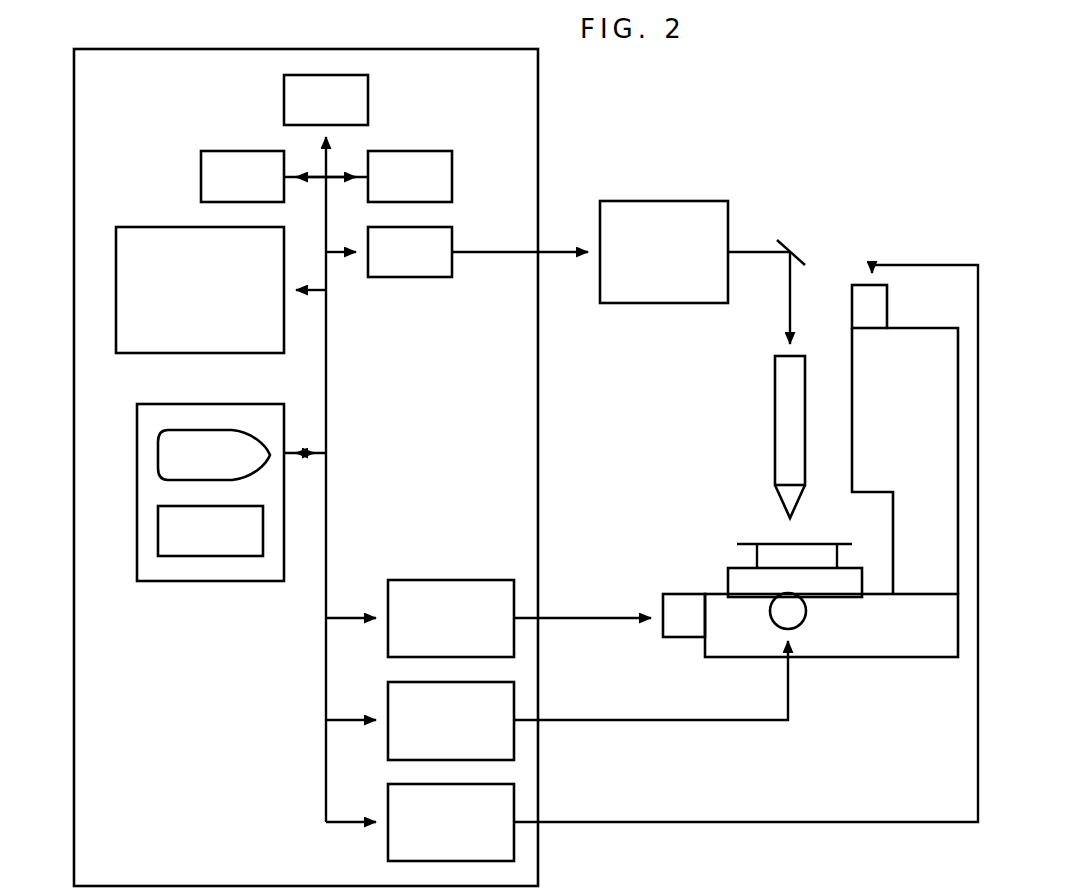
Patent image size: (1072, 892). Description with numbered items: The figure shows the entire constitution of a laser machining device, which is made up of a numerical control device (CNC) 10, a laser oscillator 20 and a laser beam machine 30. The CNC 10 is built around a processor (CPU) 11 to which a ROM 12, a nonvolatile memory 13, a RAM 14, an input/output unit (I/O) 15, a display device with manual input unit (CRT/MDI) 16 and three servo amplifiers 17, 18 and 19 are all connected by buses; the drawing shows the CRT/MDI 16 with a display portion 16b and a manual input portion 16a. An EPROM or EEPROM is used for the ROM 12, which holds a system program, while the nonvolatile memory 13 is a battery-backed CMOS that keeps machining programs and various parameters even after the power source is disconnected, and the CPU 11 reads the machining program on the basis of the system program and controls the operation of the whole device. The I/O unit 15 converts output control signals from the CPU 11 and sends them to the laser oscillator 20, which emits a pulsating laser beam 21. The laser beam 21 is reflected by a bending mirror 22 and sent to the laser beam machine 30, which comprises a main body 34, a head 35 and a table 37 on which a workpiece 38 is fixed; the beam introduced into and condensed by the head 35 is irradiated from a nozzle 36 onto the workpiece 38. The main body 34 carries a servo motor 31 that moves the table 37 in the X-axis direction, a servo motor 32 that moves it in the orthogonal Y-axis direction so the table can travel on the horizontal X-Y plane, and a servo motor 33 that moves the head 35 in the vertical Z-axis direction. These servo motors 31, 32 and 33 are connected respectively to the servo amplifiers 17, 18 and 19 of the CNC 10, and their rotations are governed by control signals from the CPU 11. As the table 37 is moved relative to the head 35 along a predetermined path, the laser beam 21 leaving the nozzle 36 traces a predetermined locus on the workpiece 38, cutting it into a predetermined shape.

The numerical control device (CNC) 10 is at (540, 72).
The processor (CPU) 11 is at (284, 103).
The ROM 12 is at (201, 158).
The nonvolatile memory 13 is at (116, 247).
The RAM 14 is at (412, 151).
The input/output unit (I/O) 15 is at (452, 237).
The display device with manual input unit (CRT/MDI) 16 is at (150, 584).
The input section 16a is at (198, 558).
The display section 16b is at (188, 431).
The servo amplifier 17 is at (434, 580).
The servo amplifier 18 is at (514, 698).
The servo amplifier 19 is at (514, 798).
The laser oscillator 20 is at (650, 201).
The laser beam 21 is at (793, 315).
The bending mirror 22 is at (792, 245).
The laser beam machine 30 is at (987, 300).
The servo motor 31 is at (663, 612).
The servo motor 32 is at (802, 628).
The servo motor 33 is at (862, 285).
The main body 34 is at (950, 345).
The head 35 is at (775, 370).
The nozzle 36 is at (780, 500).
The table 37 is at (862, 583).
The workpiece 38 is at (765, 544).